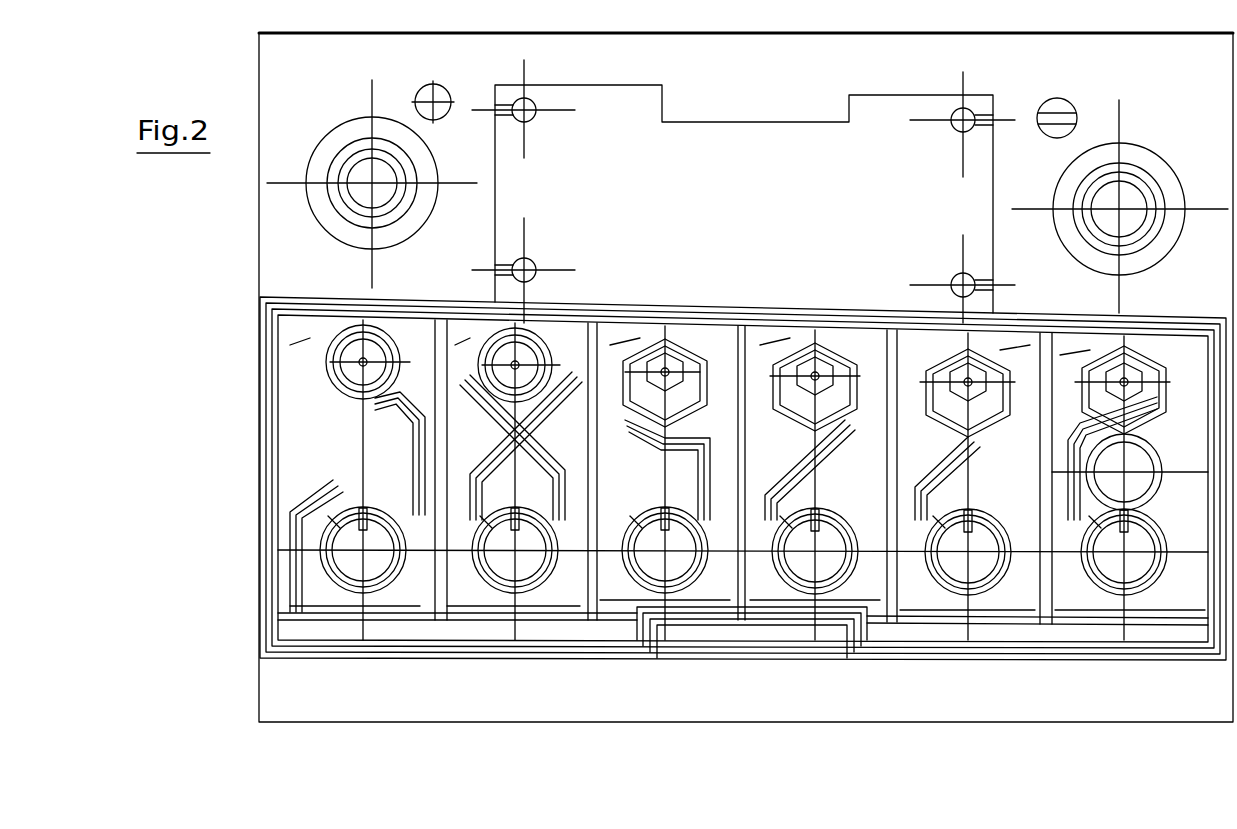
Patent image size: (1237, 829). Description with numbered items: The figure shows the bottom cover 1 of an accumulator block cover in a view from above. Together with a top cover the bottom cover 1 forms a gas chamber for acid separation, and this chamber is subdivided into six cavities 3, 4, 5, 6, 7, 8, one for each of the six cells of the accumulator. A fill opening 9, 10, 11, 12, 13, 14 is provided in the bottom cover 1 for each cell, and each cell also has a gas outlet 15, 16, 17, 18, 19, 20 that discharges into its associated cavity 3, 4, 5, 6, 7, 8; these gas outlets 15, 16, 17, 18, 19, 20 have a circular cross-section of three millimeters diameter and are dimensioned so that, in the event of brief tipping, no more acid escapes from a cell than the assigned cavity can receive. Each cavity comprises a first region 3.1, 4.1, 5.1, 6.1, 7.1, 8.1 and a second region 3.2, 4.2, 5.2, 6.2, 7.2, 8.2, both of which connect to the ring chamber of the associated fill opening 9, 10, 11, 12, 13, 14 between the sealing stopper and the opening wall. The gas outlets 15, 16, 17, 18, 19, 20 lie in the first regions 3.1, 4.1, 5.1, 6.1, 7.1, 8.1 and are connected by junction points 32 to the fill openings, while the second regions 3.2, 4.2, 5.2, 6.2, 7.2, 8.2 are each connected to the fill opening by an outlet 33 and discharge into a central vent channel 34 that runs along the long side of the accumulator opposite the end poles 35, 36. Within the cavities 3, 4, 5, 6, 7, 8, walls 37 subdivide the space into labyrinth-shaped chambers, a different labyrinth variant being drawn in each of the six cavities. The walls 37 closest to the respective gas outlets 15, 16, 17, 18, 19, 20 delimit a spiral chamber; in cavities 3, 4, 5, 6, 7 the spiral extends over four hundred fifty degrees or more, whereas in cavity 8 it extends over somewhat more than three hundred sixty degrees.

The bottom cover 1 is at (160, 268).
The cavity 3 is at (298, 438).
The first region 3.1 is at (290, 358).
The second region 3.2 is at (308, 573).
The cavity 4 is at (482, 452).
The first region 4.1 is at (455, 345).
The second region 4.2 is at (455, 597).
The cavity 5 is at (632, 462).
The first region 5.1 is at (617, 340).
The second region 5.2 is at (605, 595).
The cavity 6 is at (775, 452).
The first region 6.1 is at (780, 333).
The second region 6.2 is at (905, 590).
The cavity 7 is at (925, 456).
The first region 7.1 is at (1013, 348).
The second region 7.2 is at (1033, 593).
The cavity 8 is at (1182, 444).
The first region 8.1 is at (1070, 353).
The second region 8.2 is at (1182, 600).
The fill opening 9 is at (352, 557).
The fill opening 10 is at (497, 560).
The fill opening 11 is at (650, 563).
The fill opening 12 is at (818, 560).
The fill opening 13 is at (953, 570).
The fill opening 14 is at (1110, 568).
The gas outlet 15 is at (360, 360).
The gas outlet 16 is at (517, 365).
The gas outlet 17 is at (667, 370).
The gas outlet 18 is at (813, 372).
The gas outlet 19 is at (967, 380).
The gas outlet 20 is at (1126, 380).
The junction point 32 is at (390, 513).
The outlet 33 is at (320, 518).
The central vent channel 34 is at (700, 600).
The end pole 35 is at (360, 190).
The end pole 36 is at (1135, 197).
The wall 37 is at (320, 395).